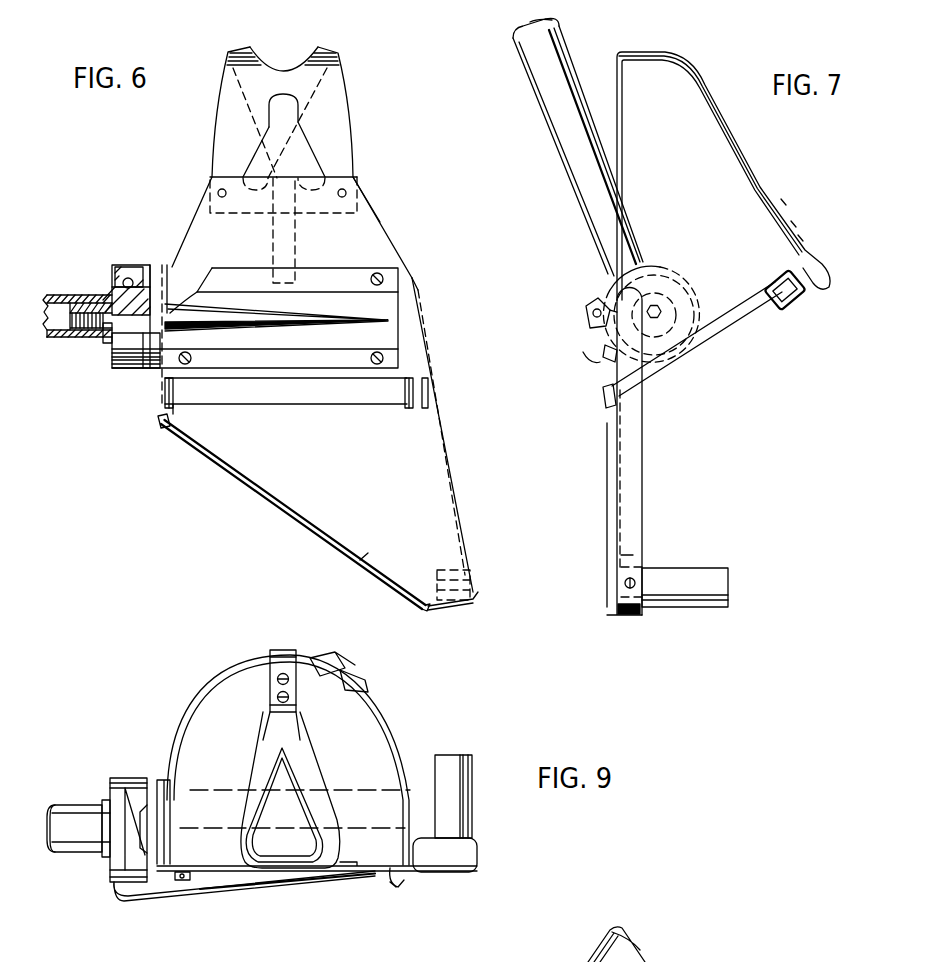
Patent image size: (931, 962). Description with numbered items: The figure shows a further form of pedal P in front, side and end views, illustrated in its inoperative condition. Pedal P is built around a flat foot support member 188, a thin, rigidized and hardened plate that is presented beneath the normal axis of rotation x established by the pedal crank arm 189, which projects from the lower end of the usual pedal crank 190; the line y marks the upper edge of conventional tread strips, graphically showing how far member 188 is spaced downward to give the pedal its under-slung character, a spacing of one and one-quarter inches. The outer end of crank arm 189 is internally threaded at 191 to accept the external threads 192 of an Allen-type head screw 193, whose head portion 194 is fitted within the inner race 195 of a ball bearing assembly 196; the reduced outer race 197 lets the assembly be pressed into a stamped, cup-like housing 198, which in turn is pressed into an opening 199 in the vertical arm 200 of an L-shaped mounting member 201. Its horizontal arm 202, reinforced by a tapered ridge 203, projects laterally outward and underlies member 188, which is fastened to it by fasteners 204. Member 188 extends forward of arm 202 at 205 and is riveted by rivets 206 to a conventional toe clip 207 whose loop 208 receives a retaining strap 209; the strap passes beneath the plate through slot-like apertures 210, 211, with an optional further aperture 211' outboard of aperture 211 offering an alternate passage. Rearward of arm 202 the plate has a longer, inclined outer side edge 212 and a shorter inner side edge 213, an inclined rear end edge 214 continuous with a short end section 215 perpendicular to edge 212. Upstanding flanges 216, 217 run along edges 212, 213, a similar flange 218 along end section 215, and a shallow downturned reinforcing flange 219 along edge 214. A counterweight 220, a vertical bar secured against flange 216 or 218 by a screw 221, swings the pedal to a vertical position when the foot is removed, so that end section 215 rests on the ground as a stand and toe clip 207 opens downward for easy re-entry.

In FIG. 6, the foot support member 188 is at (403, 470).
In FIG. 9, the foot support member 188 is at (188, 866).
In FIG. 9, the pedal crank arm 189 is at (70, 813).
In FIG. 7, the pedal crank 190 is at (546, 84).
In FIG. 9, the pedal crank 190 is at (667, 960).
In FIG. 6, the internal threads 191 is at (72, 295).
In FIG. 6, the external threads 192 is at (86, 303).
In FIG. 6, the head screw 193 is at (112, 265).
In FIG. 6, the head portion 194 is at (137, 312).
In FIG. 6, the inner race 195 is at (108, 340).
In FIG. 6, the ball bearing assembly 196 is at (142, 265).
In FIG. 6, the outer race 197 is at (130, 265).
In FIG. 6, the housing 198 is at (172, 267).
In FIG. 9, the housing 198 is at (148, 783).
In FIG. 9, the opening 199 is at (128, 783).
In FIG. 9, the vertical arm 200 is at (122, 860).
In FIG. 9, the mounting member 201 is at (125, 890).
In FIG. 7, the horizontal arm 202 is at (605, 352).
In FIG. 9, the horizontal arm 202 is at (185, 882).
In FIG. 6, the tapered ridge 203 is at (310, 315).
In FIG. 7, the tapered ridge 203 is at (593, 325).
In FIG. 9, the tapered ridge 203 is at (257, 887).
In FIG. 6, the fastening members 204 is at (380, 270).
In FIG. 6, the forward extension 205 is at (367, 220).
In FIG. 6, the rivets 206 is at (347, 192).
In FIG. 6, the toe clip 207 is at (332, 92).
In FIG. 7, the toe clip 207 is at (745, 147).
In FIG. 9, the toe clip 207 is at (297, 753).
In FIG. 7, the loop 208 is at (815, 258).
In FIG. 6, the retaining strap 209 is at (283, 404).
In FIG. 7, the retaining strap 209 is at (723, 332).
In FIG. 9, the retaining strap 209 is at (247, 657).
In FIG. 6, the aperture 210 is at (183, 406).
In FIG. 6, the aperture 211 is at (383, 418).
In FIG. 6, the further aperture 211' is at (465, 402).
In FIG. 6, the outer side edge 212 is at (428, 347).
In FIG. 6, the inner side edge 213 is at (160, 420).
In FIG. 6, the rear end edge 214 is at (307, 532).
In FIG. 6, the end section 215 is at (448, 607).
In FIG. 7, the flange 216 is at (627, 488).
In FIG. 9, the flange 216 is at (463, 853).
In FIG. 7, the flange 217 is at (688, 297).
In FIG. 9, the flange 217 is at (182, 738).
In FIG. 6, the flange 218 is at (427, 608).
In FIG. 6, the reinforcing flange 219 is at (363, 557).
In FIG. 7, the reinforcing flange 219 is at (610, 540).
In FIG. 9, the reinforcing flange 219 is at (400, 887).
In FIG. 7, the counterweight 220 is at (695, 575).
In FIG. 9, the counterweight 220 is at (450, 763).
In FIG. 6, the screw 221 is at (477, 578).
In FIG. 7, the screw 221 is at (625, 583).
In FIG. 6, the pedal P is at (417, 272).
In FIG. 9, the normal axis of rotation x is at (377, 827).
In FIG. 9, the line y is at (358, 790).